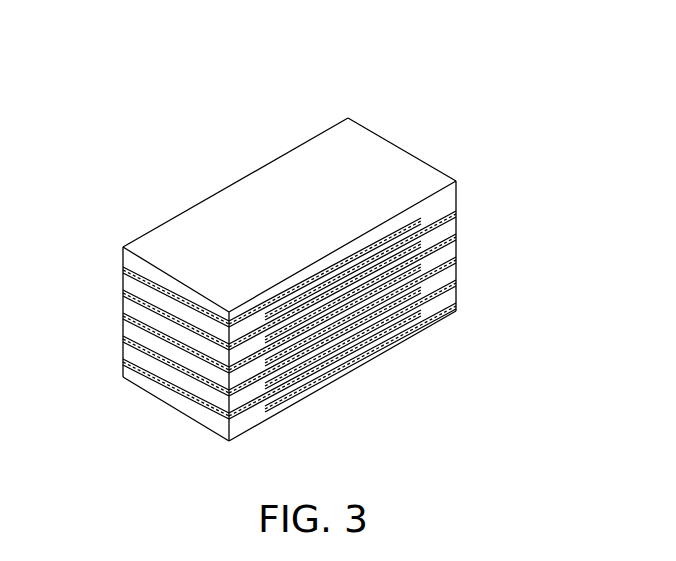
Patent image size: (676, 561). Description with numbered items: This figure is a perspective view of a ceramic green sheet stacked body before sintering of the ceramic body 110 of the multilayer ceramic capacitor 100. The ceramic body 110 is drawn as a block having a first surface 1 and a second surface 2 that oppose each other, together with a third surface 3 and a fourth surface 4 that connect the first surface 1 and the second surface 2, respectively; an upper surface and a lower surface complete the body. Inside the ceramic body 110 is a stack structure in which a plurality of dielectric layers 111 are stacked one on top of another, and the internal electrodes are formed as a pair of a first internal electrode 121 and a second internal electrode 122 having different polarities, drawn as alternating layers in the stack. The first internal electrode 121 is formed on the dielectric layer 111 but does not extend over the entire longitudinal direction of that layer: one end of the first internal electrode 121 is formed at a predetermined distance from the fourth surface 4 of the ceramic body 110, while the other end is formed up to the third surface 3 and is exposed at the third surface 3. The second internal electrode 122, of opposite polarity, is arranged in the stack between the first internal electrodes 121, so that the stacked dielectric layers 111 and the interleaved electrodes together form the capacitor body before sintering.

The multilayer ceramic capacitor 100 is at (140, 26).
The ceramic body 110 is at (285, 178).
The dielectric layer 111 is at (333, 370).
The first internal electrode 121 is at (137, 375).
The second internal electrode 122 is at (456, 228).
The first surface 1 is at (208, 198).
The second surface 2 is at (436, 314).
The third surface 3 is at (164, 394).
The fourth surface 4 is at (418, 156).